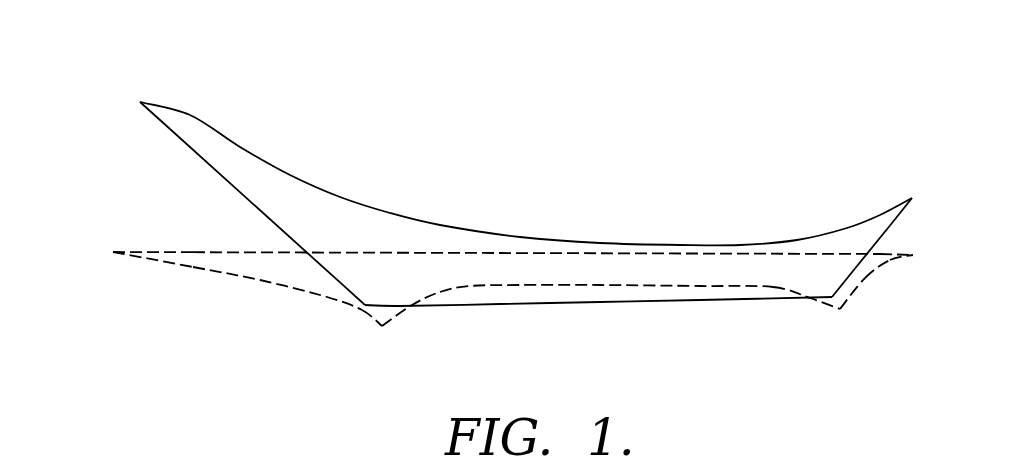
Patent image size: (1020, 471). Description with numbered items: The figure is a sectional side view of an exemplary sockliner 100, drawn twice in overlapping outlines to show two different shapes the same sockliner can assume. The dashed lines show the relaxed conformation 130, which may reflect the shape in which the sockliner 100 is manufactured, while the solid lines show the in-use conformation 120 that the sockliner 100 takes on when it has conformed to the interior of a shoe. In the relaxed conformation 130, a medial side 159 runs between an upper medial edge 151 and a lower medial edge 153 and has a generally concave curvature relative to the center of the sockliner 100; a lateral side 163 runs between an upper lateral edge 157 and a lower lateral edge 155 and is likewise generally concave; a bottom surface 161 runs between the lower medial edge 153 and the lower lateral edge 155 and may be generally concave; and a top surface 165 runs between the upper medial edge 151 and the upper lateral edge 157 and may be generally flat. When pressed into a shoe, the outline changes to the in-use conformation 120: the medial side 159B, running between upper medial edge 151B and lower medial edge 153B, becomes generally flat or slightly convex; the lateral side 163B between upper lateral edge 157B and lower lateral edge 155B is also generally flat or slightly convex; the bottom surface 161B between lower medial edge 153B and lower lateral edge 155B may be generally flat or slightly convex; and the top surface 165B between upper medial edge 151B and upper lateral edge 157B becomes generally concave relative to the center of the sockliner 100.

The sockliner 100 is at (618, 95).
The in-use conformation 120 is at (860, 228).
The relaxed conformation 130 is at (693, 252).
The upper medial edge 151 is at (108, 255).
The upper medial edge 151B is at (140, 101).
The lower medial edge 153 is at (385, 328).
The lower medial edge 153B is at (362, 310).
The lower lateral edge 155 is at (823, 315).
The lower lateral edge 155B is at (833, 300).
The upper lateral edge 157 is at (920, 255).
The upper lateral edge 157B is at (912, 198).
The medial side 159 is at (267, 277).
The medial side 159B is at (195, 157).
The bottom surface 161 is at (606, 289).
The bottom surface 161B is at (697, 303).
The lateral side 163 is at (865, 284).
The lateral side 163B is at (858, 270).
The top surface 165 is at (375, 250).
The top surface 165B is at (467, 228).